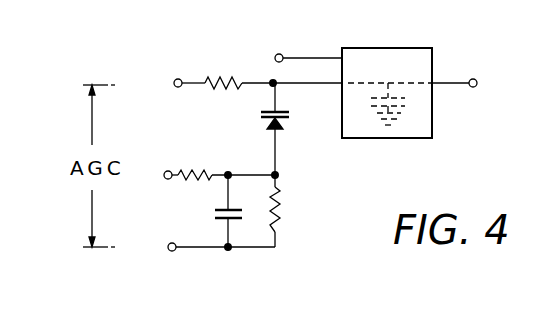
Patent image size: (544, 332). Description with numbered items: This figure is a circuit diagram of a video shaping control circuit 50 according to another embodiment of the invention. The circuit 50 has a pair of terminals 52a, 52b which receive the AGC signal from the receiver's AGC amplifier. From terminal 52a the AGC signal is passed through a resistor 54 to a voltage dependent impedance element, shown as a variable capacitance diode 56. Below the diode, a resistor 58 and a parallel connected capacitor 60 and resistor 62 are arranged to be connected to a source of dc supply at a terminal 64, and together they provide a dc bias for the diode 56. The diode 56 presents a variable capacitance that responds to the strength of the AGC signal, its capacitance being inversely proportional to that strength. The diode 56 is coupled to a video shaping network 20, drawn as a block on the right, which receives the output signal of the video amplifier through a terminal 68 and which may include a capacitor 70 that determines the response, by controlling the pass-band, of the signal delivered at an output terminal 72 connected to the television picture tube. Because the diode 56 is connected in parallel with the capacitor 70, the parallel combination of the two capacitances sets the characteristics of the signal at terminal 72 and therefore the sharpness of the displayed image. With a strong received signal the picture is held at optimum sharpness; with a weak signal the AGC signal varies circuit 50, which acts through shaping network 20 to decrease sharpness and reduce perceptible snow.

The video shaping network 20 is at (426, 138).
The video shaping control circuit 50 is at (331, 180).
The terminal 52a is at (174, 81).
The terminal 52b is at (170, 250).
The resistor 54 is at (219, 78).
The variable capacitance diode 56 is at (285, 122).
The resistor 58 is at (200, 172).
The capacitor 60 is at (215, 218).
The resistor 62 is at (280, 216).
The terminal 64 is at (168, 171).
The terminal 68 is at (278, 54).
The capacitor 70 is at (400, 111).
The output terminal 72 is at (477, 80).